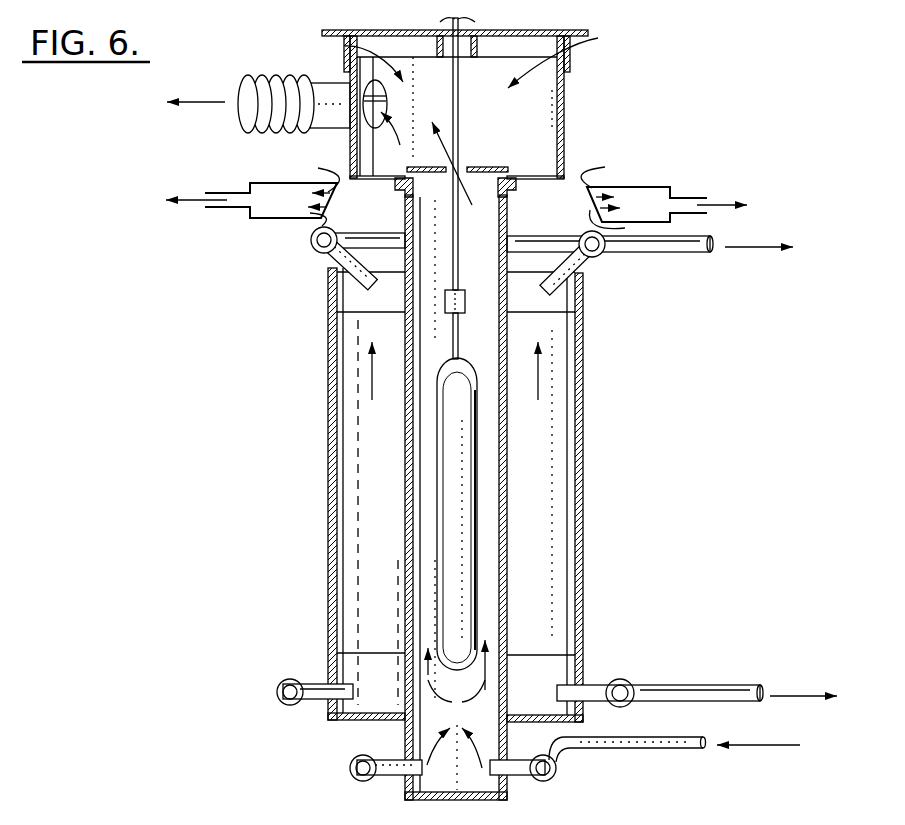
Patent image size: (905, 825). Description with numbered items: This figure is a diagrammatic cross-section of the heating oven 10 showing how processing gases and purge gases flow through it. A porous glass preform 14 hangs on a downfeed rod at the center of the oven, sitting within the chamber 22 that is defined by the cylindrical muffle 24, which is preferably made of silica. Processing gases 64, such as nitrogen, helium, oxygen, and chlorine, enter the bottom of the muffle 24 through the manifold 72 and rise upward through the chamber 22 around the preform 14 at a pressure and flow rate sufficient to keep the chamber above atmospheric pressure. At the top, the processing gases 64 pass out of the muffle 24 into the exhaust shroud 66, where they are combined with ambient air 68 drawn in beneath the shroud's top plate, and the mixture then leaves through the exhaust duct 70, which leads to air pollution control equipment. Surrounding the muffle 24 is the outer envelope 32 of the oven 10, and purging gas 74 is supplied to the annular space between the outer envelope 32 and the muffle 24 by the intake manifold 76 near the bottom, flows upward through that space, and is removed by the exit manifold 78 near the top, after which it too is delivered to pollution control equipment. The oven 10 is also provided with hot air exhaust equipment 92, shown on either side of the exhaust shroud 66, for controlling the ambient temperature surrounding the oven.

The heating oven 10 is at (270, 414).
The porous glass preform 14 is at (452, 458).
The chamber 22 is at (483, 548).
The cylindrical muffle 24 is at (406, 560).
The outer envelope 32 is at (583, 482).
The processing gases 64 is at (504, 203).
The exhaust shroud 66 is at (561, 98).
The ambient air 68 is at (345, 46).
The exhaust duct 70 is at (275, 135).
The manifold 72 is at (593, 750).
The purging gas 74 is at (370, 377).
The intake manifold 76 is at (318, 687).
The exit manifold 78 is at (326, 262).
The hot air exhaust equipment 92 is at (243, 223).